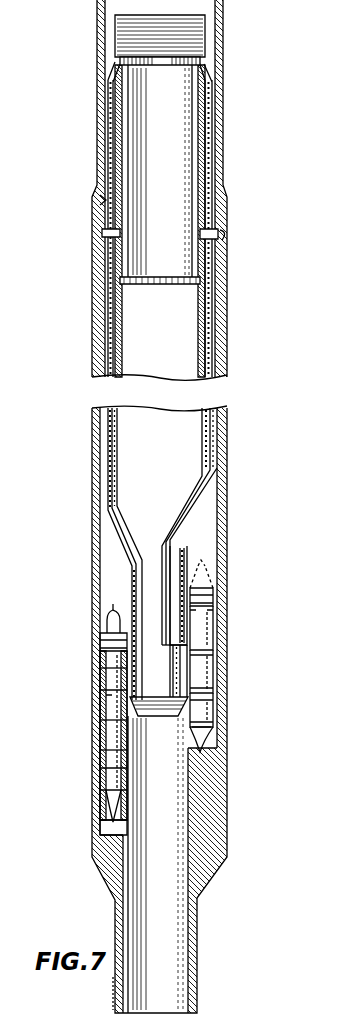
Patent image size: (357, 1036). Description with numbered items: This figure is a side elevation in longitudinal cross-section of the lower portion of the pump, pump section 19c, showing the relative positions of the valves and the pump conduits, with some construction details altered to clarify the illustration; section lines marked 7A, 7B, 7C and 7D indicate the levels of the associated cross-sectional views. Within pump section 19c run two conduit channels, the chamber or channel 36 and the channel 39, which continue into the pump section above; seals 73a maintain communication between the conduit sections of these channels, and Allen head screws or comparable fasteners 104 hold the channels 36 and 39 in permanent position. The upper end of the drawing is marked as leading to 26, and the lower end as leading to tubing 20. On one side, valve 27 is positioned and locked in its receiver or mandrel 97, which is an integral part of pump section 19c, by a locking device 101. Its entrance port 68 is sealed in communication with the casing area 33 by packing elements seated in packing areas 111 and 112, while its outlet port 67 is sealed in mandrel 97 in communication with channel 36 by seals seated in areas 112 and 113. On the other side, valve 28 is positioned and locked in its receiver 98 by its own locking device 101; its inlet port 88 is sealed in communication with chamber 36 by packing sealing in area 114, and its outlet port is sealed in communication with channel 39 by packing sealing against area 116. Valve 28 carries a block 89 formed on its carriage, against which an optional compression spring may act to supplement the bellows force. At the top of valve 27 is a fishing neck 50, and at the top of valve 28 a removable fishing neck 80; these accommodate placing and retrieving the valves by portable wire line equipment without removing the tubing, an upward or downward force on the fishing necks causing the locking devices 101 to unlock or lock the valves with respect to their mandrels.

The pump section 19c is at (236, 500).
The chamber or channel 36 is at (107, 82).
The channel 39 is at (213, 117).
The upper flow path (to 26) 26 is at (158, 83).
The tubing 20 is at (157, 1004).
The Allen head screws 104 is at (104, 213).
The seals 73a is at (219, 240).
The casing area 33 is at (262, 401).
The fishing neck 80 is at (193, 566).
The locking device 101 is at (218, 605).
The sealing area 116 is at (182, 645).
The block 89 is at (183, 648).
The receiver 98 is at (216, 675).
The valve 28 is at (216, 716).
The sealing area 114 is at (205, 751).
The inlet port 88 is at (182, 702).
The outlet port 67 is at (136, 706).
The fishing neck 50 is at (110, 618).
The sealing area 113 is at (118, 660).
The valve 27 is at (100, 693).
The receiver 97 is at (118, 715).
The packing area 112 is at (118, 732).
The entrance port 68 is at (100, 772).
The packing area 111 is at (113, 834).
The section line 7A- 7A is at (43, 746).
The section line 7B- 7B is at (50, 677).
The section line 7C- 7C is at (73, 602).
The section line 7D- 7D is at (71, 512).